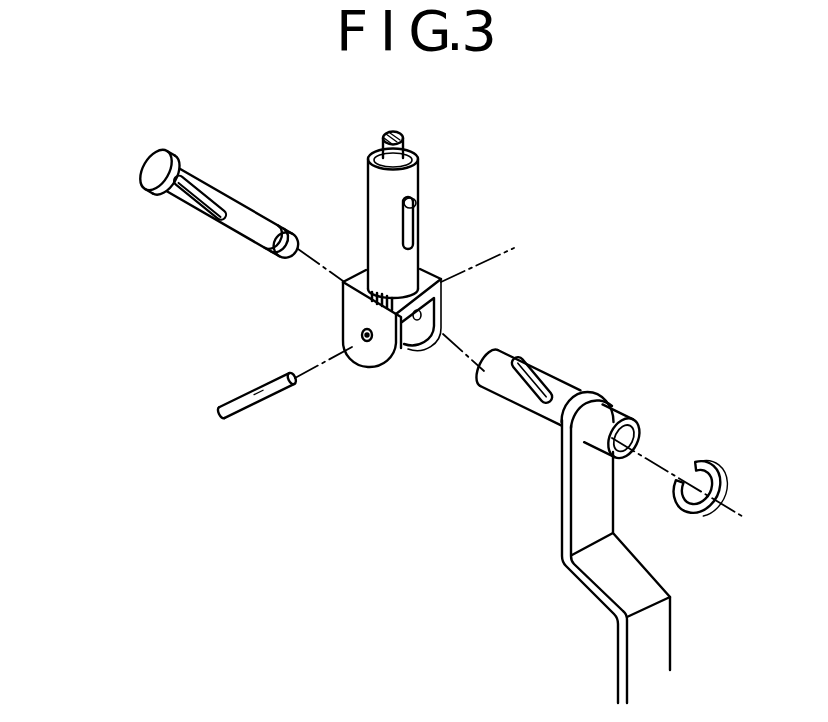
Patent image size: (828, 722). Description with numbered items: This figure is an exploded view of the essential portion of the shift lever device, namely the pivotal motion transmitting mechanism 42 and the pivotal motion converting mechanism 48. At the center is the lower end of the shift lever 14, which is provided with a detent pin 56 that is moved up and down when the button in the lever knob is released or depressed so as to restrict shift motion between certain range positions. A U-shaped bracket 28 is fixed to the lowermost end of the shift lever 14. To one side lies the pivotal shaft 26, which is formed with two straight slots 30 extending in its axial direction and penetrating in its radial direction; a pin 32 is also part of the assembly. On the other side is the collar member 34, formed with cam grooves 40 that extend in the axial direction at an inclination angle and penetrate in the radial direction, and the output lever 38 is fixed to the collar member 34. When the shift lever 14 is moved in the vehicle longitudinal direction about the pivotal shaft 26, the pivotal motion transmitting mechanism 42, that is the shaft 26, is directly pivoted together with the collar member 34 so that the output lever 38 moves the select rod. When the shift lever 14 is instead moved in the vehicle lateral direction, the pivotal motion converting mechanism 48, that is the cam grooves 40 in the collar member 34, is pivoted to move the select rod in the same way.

The shift lever 14 is at (418, 182).
The pivotal shaft 26 is at (250, 205).
The U-shaped bracket 28 is at (428, 276).
The straight slot 30 is at (205, 218).
The pin 32 is at (270, 401).
The collar member 34 is at (512, 404).
The output lever 38 is at (603, 570).
The cam groove 40 is at (532, 368).
The pivotal motion transmitting mechanism 42 is at (133, 245).
The pivotal motion converting mechanism 48 is at (598, 366).
The detent pin 56 is at (419, 208).